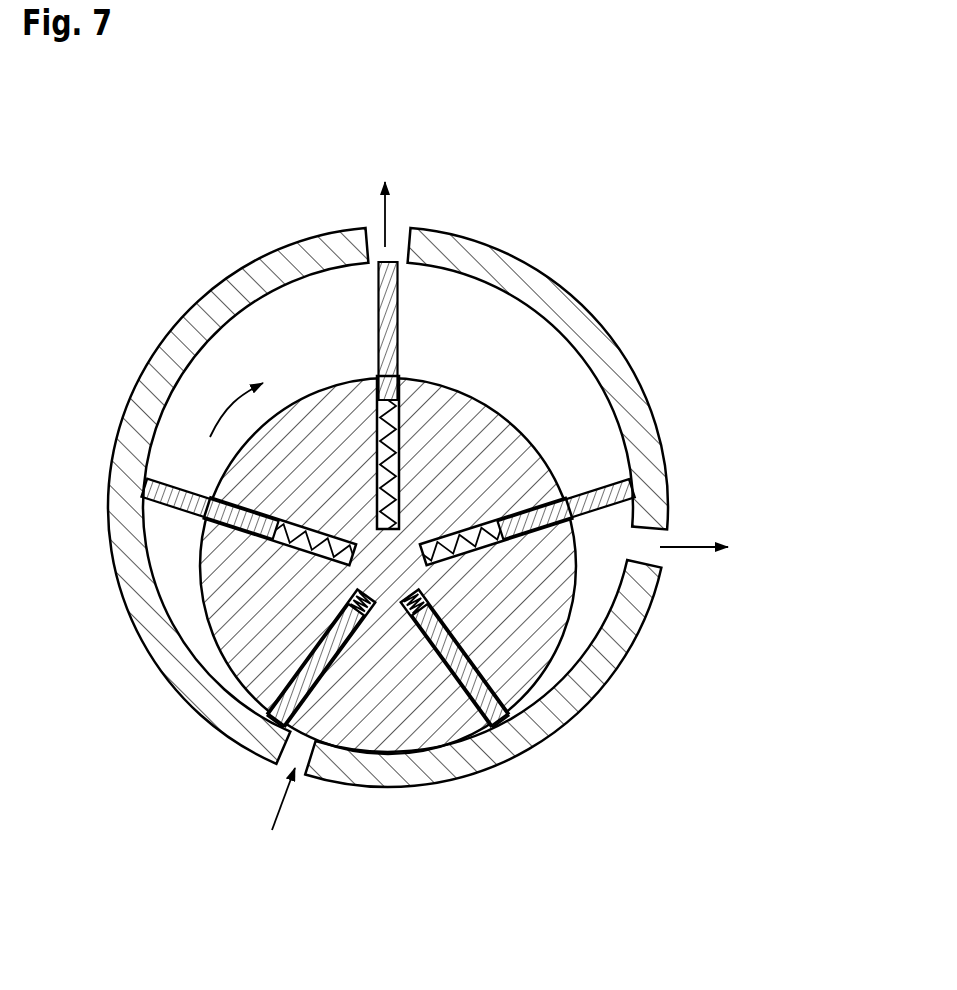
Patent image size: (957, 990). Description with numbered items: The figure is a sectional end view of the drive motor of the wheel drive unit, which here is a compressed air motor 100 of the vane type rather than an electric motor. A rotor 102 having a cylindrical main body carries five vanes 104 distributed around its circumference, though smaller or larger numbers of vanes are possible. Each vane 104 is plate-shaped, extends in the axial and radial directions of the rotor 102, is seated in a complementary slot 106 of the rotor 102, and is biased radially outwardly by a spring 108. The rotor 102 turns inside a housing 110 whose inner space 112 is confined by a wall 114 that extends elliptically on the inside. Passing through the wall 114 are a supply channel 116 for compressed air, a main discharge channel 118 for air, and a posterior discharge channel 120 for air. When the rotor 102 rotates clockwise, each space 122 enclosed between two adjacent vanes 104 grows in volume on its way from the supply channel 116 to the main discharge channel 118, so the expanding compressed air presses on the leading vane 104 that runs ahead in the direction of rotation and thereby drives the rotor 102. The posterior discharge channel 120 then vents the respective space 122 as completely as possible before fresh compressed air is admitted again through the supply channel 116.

The compressed air motor 100 is at (552, 183).
The rotor 102 is at (387, 560).
The vane 104 is at (385, 337).
The slot 106 is at (413, 420).
The spring 108 is at (420, 460).
The housing 110 is at (562, 287).
The inner space 112 is at (587, 420).
The wall 114 is at (173, 353).
The supply channel 116 is at (307, 762).
The main discharge channel 118 is at (395, 242).
The posterior discharge channel 120 is at (658, 535).
The space 122 is at (302, 298).